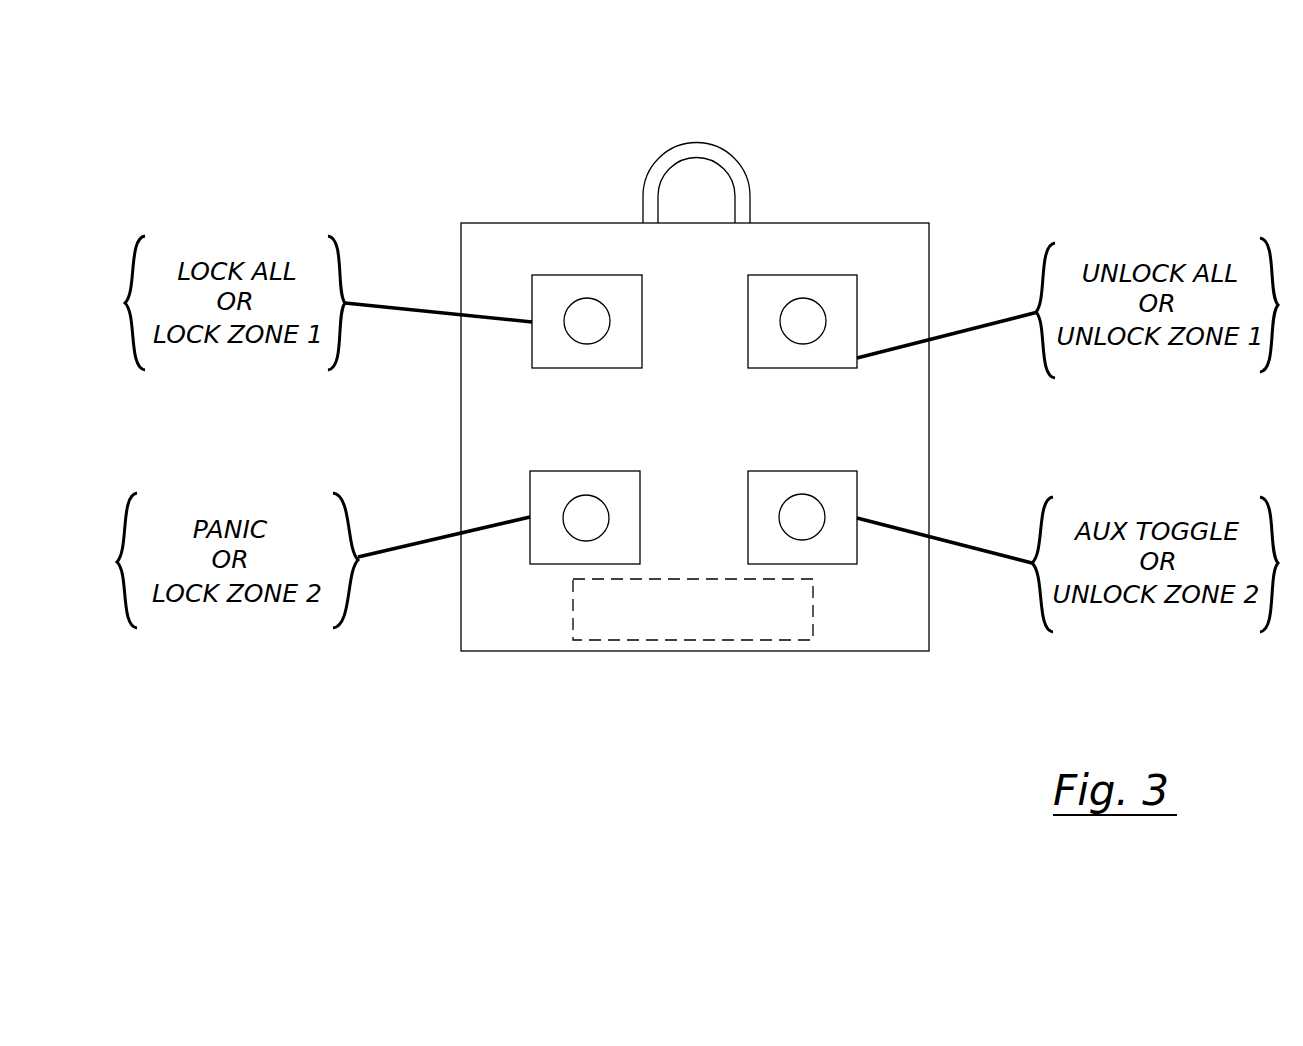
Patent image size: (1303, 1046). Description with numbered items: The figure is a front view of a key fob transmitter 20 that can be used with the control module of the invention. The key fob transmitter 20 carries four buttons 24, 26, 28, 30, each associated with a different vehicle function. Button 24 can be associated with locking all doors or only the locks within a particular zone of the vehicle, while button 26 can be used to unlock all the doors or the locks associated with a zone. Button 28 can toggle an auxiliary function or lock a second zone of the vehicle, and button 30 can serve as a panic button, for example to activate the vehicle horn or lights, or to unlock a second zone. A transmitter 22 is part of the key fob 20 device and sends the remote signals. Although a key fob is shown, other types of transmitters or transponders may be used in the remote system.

The key fob transmitter 20 is at (830, 100).
The transmitter 22 is at (743, 627).
The button 24 is at (571, 284).
The button 26 is at (819, 285).
The button 28 is at (553, 491).
The button 30 is at (834, 492).